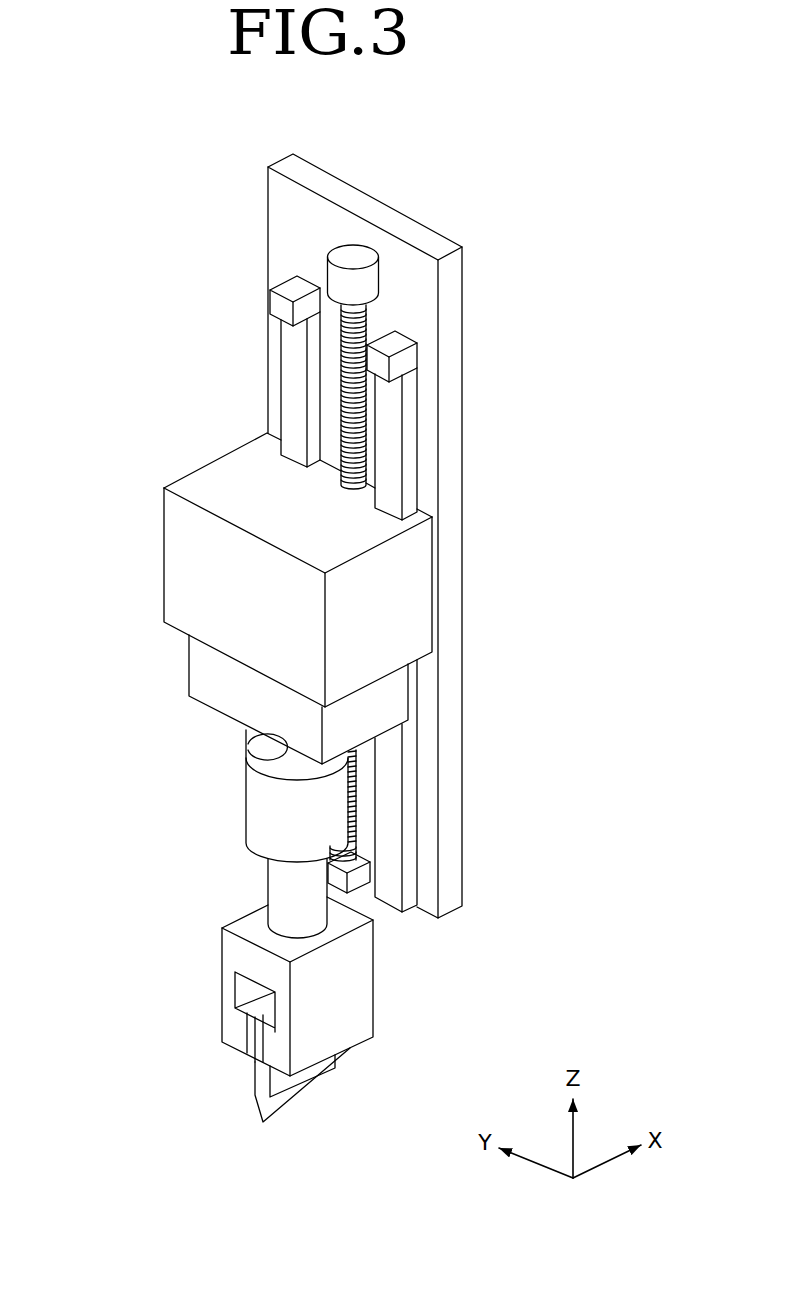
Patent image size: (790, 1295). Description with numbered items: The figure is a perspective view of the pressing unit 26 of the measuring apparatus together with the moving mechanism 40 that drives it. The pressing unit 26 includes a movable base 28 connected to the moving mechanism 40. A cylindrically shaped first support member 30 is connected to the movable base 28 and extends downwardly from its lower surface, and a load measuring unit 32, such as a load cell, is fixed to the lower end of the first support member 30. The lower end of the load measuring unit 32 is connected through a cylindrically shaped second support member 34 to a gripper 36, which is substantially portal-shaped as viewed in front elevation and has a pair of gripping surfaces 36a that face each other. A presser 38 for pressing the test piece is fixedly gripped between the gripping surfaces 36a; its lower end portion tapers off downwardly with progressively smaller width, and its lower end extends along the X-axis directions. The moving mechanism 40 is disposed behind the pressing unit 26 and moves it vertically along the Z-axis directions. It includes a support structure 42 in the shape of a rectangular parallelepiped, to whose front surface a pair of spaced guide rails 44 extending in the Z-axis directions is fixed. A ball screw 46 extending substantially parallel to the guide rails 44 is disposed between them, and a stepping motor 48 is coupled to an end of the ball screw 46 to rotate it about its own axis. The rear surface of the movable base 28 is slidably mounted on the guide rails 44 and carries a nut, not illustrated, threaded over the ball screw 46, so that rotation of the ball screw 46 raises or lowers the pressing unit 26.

The pressing unit 26 is at (200, 433).
The movable base 28 is at (203, 581).
The first support member 30 is at (262, 747).
The load measuring unit 32 is at (265, 822).
The second support member 34 is at (292, 885).
The gripper 36 is at (355, 987).
The gripping surfaces 36a is at (250, 1017).
The presser 38 is at (300, 1097).
The moving mechanism 40 is at (528, 277).
The support structure 42 is at (452, 415).
The guide rails 44 is at (290, 293).
The ball screw 46 is at (345, 385).
The stepping motor 48 is at (356, 255).